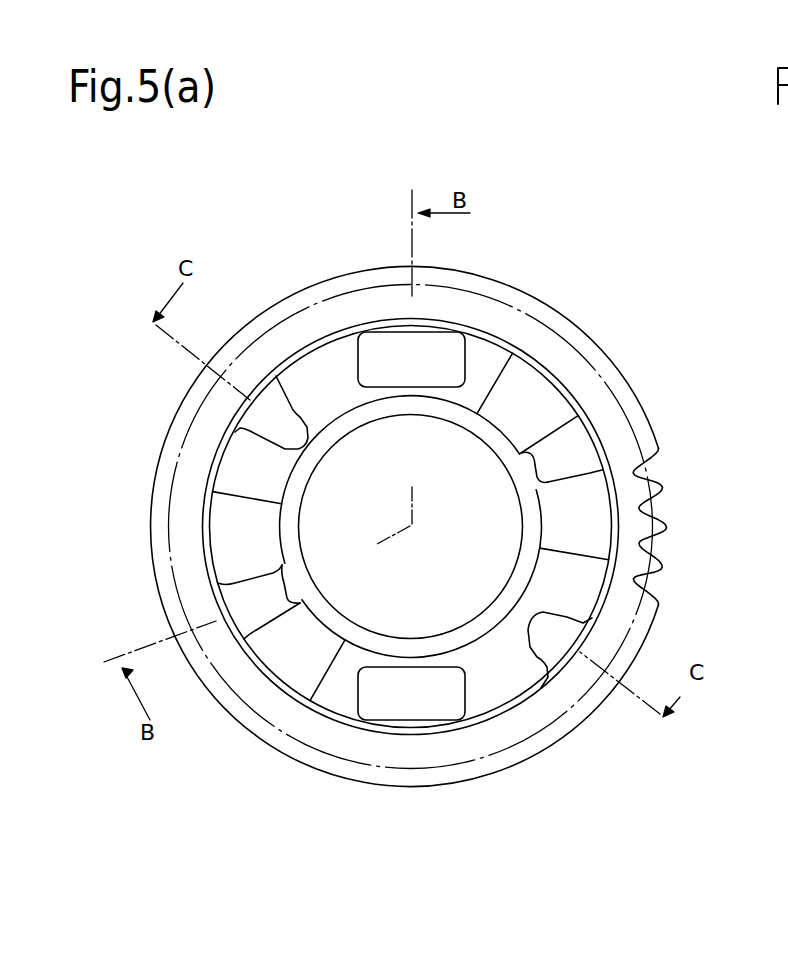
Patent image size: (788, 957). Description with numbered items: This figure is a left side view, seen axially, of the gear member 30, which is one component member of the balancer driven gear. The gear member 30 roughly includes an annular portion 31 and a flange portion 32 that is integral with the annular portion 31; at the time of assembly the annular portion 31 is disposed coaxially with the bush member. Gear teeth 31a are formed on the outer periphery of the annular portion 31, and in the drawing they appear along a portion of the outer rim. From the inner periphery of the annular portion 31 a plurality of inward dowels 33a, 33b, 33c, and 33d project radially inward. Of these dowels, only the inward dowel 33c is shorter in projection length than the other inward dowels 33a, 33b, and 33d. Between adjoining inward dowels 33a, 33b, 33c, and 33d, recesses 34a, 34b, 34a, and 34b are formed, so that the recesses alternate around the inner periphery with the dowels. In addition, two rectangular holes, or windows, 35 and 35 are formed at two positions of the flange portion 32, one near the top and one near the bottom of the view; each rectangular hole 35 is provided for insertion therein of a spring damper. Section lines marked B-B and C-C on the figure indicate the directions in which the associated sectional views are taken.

The gear member 30 is at (660, 248).
The annular portion 31 is at (603, 403).
The gear teeth 31a is at (662, 498).
The flange portion 32 is at (348, 700).
The inward dowel 33a is at (286, 414).
The inward dowel 33b is at (258, 610).
The inward dowel 33c is at (552, 648).
The inward dowel 33d is at (563, 453).
The recess 34a is at (240, 545).
The recess 34b is at (483, 368).
The rectangular hole (window) 35 is at (403, 352).